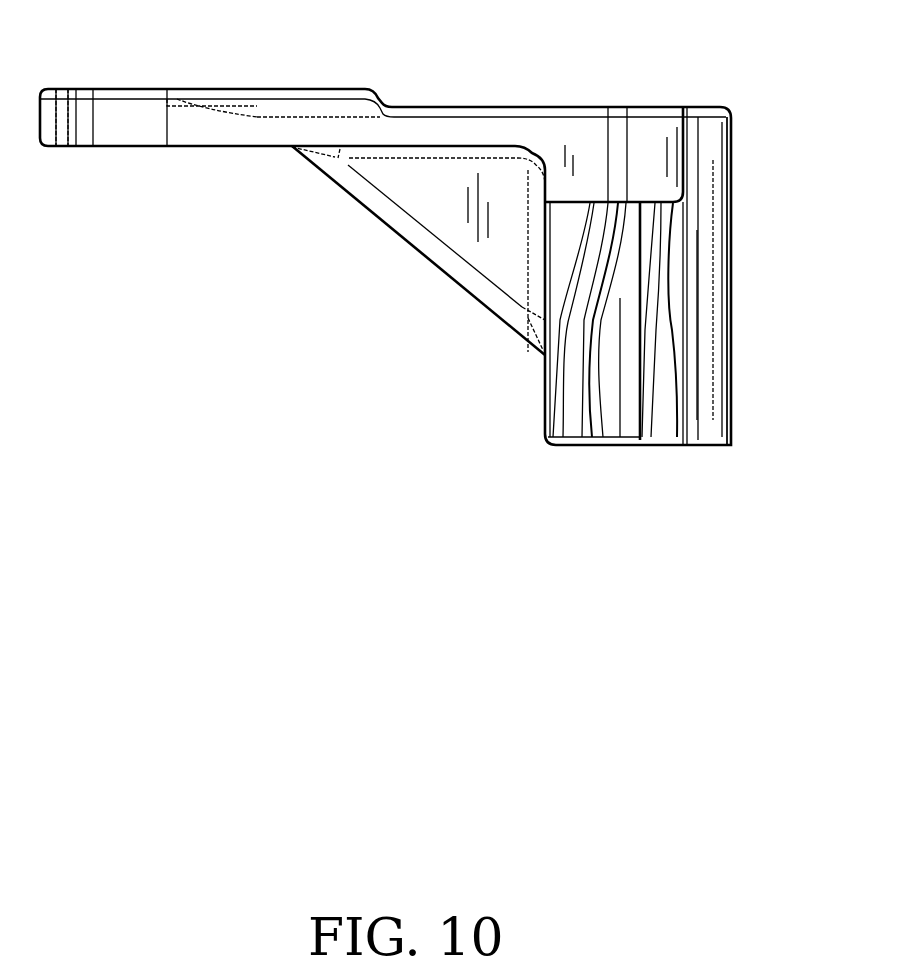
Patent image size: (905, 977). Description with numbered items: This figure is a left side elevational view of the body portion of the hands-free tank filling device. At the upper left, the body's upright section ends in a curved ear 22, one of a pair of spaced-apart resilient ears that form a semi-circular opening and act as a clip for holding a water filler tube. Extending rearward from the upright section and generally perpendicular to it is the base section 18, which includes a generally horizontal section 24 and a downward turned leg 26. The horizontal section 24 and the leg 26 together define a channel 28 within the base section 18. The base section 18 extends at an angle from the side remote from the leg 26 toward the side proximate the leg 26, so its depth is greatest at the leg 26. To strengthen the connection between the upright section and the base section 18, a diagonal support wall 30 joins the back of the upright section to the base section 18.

The base section 18 is at (582, 136).
The curved ear 22 is at (63, 112).
The horizontal section 24 is at (580, 297).
The downward turned leg 26 is at (711, 211).
The channel 28 is at (621, 447).
The support wall 30 is at (440, 210).